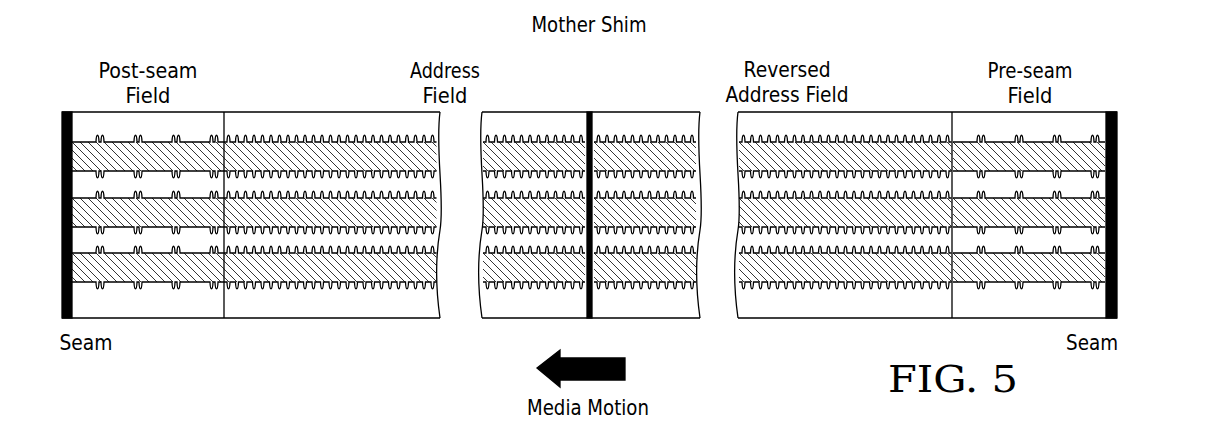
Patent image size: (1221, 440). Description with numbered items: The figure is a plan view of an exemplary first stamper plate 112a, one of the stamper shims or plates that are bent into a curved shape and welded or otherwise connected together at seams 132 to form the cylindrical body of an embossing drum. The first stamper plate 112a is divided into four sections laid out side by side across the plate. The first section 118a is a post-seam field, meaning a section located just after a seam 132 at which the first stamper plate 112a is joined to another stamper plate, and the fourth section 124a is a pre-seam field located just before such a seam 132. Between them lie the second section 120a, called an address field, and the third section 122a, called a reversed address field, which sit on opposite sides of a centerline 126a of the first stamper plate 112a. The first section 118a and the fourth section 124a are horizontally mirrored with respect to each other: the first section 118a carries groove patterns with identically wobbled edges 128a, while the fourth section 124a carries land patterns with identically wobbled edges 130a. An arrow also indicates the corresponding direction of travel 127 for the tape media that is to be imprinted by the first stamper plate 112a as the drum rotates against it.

The first stamper plate 112a is at (1156, 103).
The first section 118a is at (192, 112).
The second section 120a is at (355, 112).
The third section 122a is at (865, 112).
The fourth section 124a is at (1078, 112).
The centerline 126a is at (588, 112).
The direction of travel 127 is at (626, 370).
The identically wobbled edges 128a is at (218, 160).
The identically wobbled edges 130a is at (970, 193).
The seams 132 is at (67, 112).